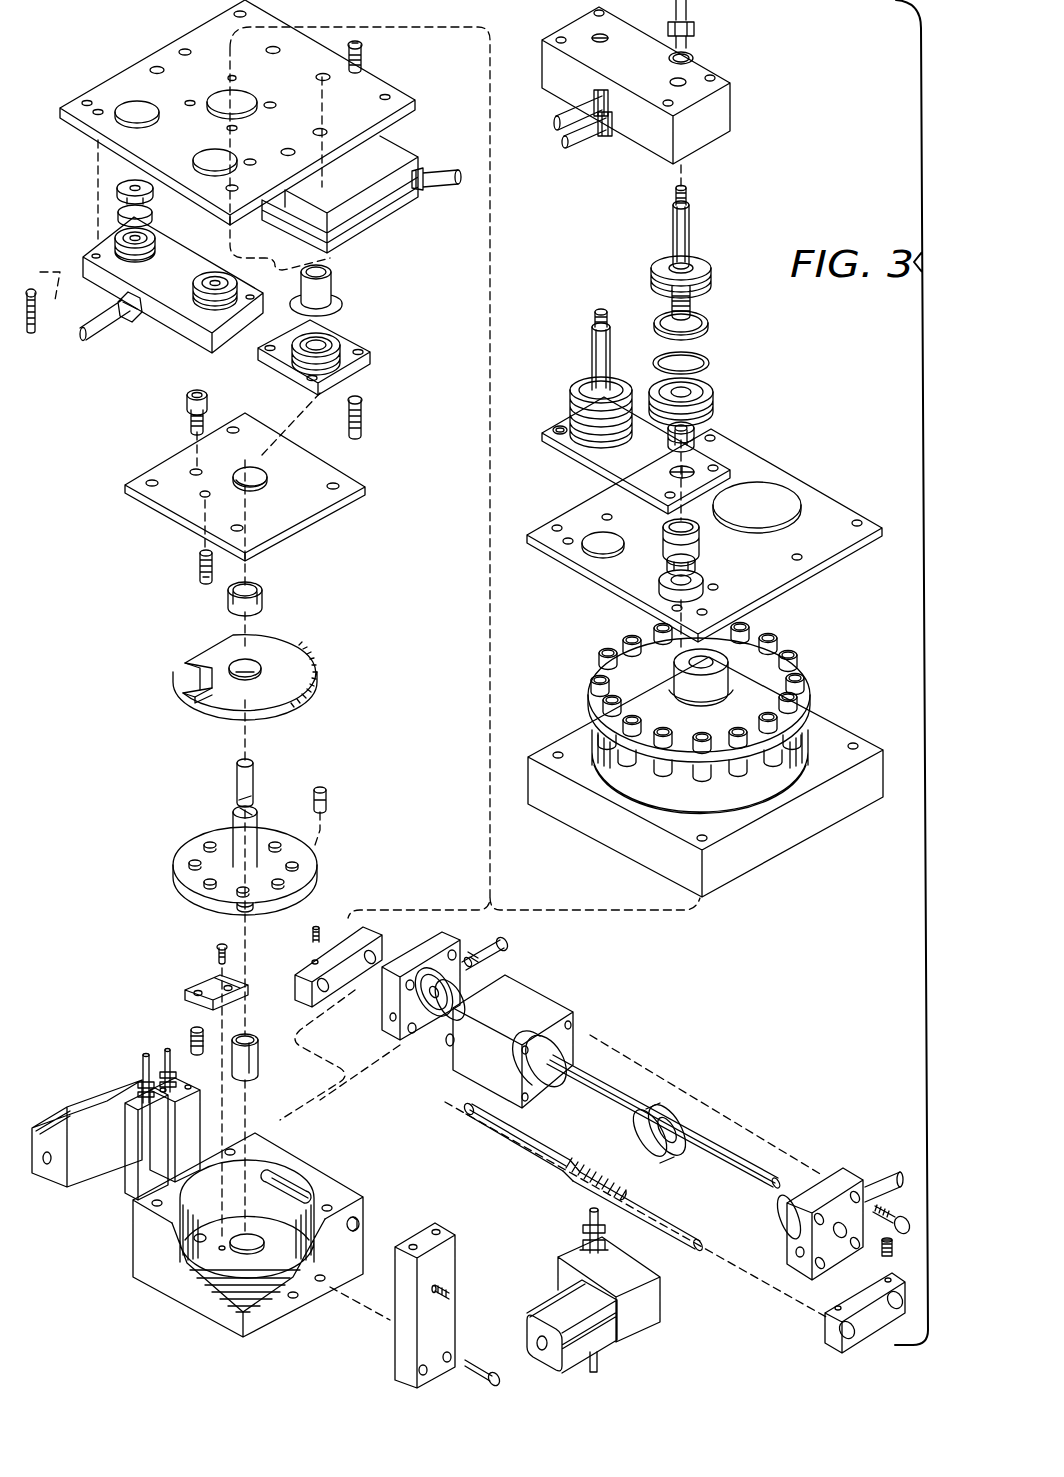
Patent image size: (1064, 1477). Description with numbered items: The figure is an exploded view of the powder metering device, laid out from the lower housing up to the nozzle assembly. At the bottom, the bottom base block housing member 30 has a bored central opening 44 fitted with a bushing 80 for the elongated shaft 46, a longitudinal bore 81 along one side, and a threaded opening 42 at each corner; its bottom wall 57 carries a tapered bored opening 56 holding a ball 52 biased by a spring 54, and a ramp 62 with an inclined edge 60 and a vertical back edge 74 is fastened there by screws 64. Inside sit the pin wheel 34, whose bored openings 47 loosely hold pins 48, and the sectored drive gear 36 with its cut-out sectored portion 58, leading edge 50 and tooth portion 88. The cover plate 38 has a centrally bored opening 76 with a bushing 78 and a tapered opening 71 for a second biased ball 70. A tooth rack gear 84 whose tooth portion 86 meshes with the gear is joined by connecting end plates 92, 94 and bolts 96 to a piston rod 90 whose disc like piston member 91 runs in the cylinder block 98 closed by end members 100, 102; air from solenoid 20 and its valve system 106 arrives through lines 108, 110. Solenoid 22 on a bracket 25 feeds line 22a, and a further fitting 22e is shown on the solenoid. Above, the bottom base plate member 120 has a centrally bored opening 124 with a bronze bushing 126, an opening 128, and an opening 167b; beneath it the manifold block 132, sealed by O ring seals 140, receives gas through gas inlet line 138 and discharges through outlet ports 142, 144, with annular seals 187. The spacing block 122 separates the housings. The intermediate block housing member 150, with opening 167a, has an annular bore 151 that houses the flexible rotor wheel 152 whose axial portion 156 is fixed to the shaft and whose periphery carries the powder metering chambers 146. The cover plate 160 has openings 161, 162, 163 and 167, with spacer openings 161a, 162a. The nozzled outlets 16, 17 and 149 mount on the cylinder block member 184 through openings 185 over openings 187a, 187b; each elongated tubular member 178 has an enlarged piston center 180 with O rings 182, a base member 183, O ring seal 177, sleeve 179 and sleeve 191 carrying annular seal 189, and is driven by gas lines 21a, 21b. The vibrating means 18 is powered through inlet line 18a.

The powder outlet nozzle 16 is at (698, 228).
The powder outlet nozzle 17 is at (572, 359).
The powder vibrating means 18 is at (372, 216).
The inlet line 18a is at (440, 180).
The solenoid 20 is at (120, 1080).
The gas line 21a is at (595, 133).
The gas line 21b is at (556, 110).
The solenoid 22 is at (640, 1308).
The gas line 22a is at (598, 1365).
The valve fitting 22e is at (600, 1222).
The bracket 25 is at (155, 1176).
The bottom base block housing member 30 is at (150, 1270).
The pin wheel 34 is at (186, 855).
The sectored drive gear 36 is at (278, 710).
The cover plate 38 is at (295, 505).
The threaded opening 42 is at (330, 1205).
The bored central opening 44 is at (250, 1240).
The elongated shaft 46 is at (254, 776).
The bored opening 47 is at (299, 865).
The pin 48 is at (327, 798).
The leading edge 50 is at (190, 676).
The ball 52 is at (192, 1030).
The spring 54 is at (191, 1035).
The bored opening 56 is at (204, 1244).
The bottom wall 57 is at (240, 1272).
The cut-out sectored portion 58 is at (192, 698).
The inclined edge 60 is at (186, 984).
The ramp 62 is at (246, 990).
The screw 64 is at (228, 955).
The biased ball 70 is at (200, 570).
The tapered opening 71 is at (211, 497).
The vertical back edge 74 is at (247, 684).
The centrally bored opening 76 is at (253, 476).
The bushing 78 is at (259, 1060).
The bushing 80 is at (263, 600).
The longitudinal bore 81 is at (356, 1218).
The tooth rack gear 84 is at (526, 1131).
The tooth portion 86 is at (590, 1183).
The tooth portion 88 is at (313, 668).
The piston rod 90 is at (598, 1074).
The disc like piston member 91 is at (690, 1124).
The connecting end plate 92 is at (873, 1325).
The connecting end plate 94 is at (366, 927).
The bolt 96 is at (901, 1234).
The cylinder block 98 is at (560, 1010).
The end member 100 is at (835, 1175).
The end member 102 is at (430, 945).
The valve system 106 is at (128, 1165).
The line 108 is at (888, 1182).
The line 110 is at (476, 945).
The bottom base plate member 120 is at (262, 17).
The spacing block 122 is at (366, 370).
The centrally bored opening 124 is at (237, 115).
The bronze bushing 126 is at (326, 294).
The opening 128 is at (145, 118).
The manifold block 132 is at (187, 322).
The gas inlet line 138 is at (110, 334).
The O ring seal 140 is at (118, 214).
The outlet port 142 is at (148, 244).
The outlet port 144 is at (220, 283).
The powder metering chamber 146 is at (600, 678).
The nozzled outlet 149 is at (688, 12).
The intermediate block housing member 150 is at (758, 850).
The annular bore 151 is at (760, 790).
The flexible rotor wheel 152 is at (797, 690).
The axial portion 156 is at (700, 694).
The cover plate 160 is at (780, 574).
The bored circular opening 161 is at (606, 548).
The opening 161a is at (665, 455).
The bored circular opening 162 is at (665, 590).
The opening 162a is at (617, 421).
The bored circular opening 163 is at (770, 512).
The opening 167 is at (860, 520).
The opening 167a is at (856, 744).
The opening 167b is at (392, 96).
The O ring seal 177 is at (694, 426).
The elongated tubular member 178 is at (678, 228).
The sleeve 179 is at (696, 453).
The enlarged piston center 180 is at (710, 265).
The O ring 182 is at (707, 349).
The centrally bored base member 183 is at (712, 393).
The cylinder block member 184 is at (712, 112).
The opening 185 is at (712, 80).
The annular seal 187 is at (115, 188).
The opening 187a is at (601, 32).
The opening 187b is at (628, 41).
The annular seal 189 is at (694, 566).
The sleeve 191 is at (692, 546).